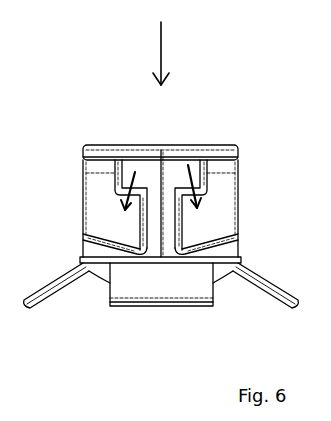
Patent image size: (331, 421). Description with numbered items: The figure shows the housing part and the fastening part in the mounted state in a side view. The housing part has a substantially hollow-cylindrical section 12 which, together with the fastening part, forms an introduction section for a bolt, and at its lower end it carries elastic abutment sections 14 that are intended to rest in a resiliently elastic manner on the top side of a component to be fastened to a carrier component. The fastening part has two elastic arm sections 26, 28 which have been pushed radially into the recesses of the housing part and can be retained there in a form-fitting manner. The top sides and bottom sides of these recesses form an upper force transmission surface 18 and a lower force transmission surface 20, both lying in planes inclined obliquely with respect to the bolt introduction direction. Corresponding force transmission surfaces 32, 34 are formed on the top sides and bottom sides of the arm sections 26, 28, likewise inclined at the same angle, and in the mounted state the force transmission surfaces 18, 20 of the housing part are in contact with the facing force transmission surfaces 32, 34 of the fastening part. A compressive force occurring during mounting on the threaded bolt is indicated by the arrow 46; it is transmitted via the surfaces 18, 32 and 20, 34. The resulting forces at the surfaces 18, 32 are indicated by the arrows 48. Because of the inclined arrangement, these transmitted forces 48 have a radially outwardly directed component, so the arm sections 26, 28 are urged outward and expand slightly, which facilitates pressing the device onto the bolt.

The hollow-cylindrical section 12 is at (127, 146).
The elastic abutment section 14 is at (158, 290).
The upper force transmission surface 18 is at (191, 190).
The lower force transmission surface 20 is at (117, 252).
The elastic arm section 26 is at (227, 202).
The elastic arm section 28 is at (93, 197).
The force transmission surface 32 is at (194, 190).
The force transmission surface 34 is at (113, 245).
The arrow indicating compressive force 46 is at (161, 45).
The arrows indicating transmitted forces 48 is at (115, 174).